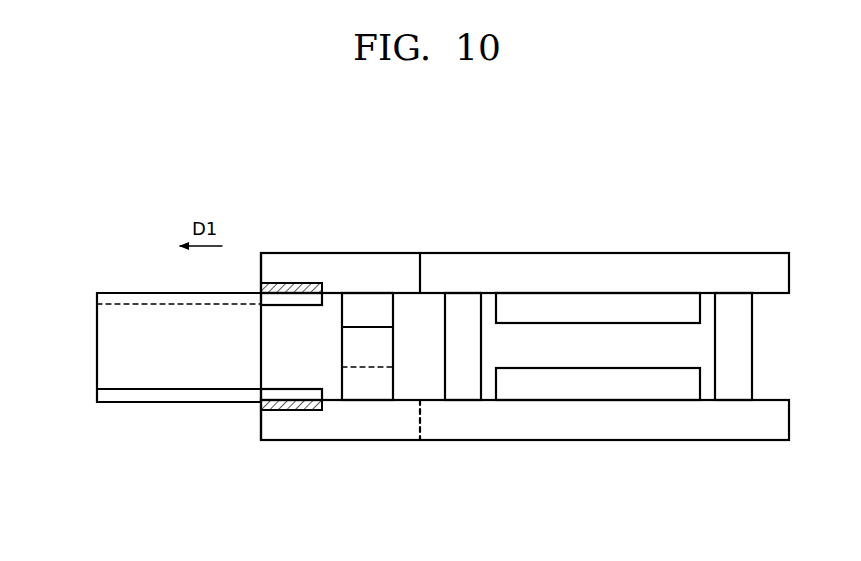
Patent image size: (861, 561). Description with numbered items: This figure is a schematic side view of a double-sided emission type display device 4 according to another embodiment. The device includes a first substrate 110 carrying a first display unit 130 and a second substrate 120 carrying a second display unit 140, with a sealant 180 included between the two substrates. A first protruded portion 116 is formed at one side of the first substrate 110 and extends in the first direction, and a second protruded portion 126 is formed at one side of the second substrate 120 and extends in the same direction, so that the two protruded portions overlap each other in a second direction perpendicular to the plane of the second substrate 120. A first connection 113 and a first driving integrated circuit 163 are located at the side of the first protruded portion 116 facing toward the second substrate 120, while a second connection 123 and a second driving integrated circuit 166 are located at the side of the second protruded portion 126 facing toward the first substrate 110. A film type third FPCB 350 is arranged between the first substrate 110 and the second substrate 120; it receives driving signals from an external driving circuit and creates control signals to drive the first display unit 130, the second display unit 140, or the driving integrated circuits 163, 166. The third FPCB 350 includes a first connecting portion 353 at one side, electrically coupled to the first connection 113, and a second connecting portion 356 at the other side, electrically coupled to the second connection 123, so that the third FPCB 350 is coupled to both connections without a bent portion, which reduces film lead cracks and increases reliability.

The double-sided emission type display device 4 is at (812, 203).
The first substrate 110 is at (653, 430).
The first connection 113 is at (262, 404).
The first protruded portion 116 is at (310, 435).
The second substrate 120 is at (653, 265).
The second connection 123 is at (260, 285).
The second protruded portion 126 is at (312, 262).
The first display unit 130 is at (560, 387).
The second display unit 140 is at (558, 303).
The first driving integrated circuit 163 is at (372, 393).
The second driving integrated circuit 166 is at (372, 302).
The sealant 180 is at (463, 303).
The third FPCB 350 is at (103, 348).
The first connecting portion 353 is at (280, 412).
The second connecting portion 356 is at (285, 287).